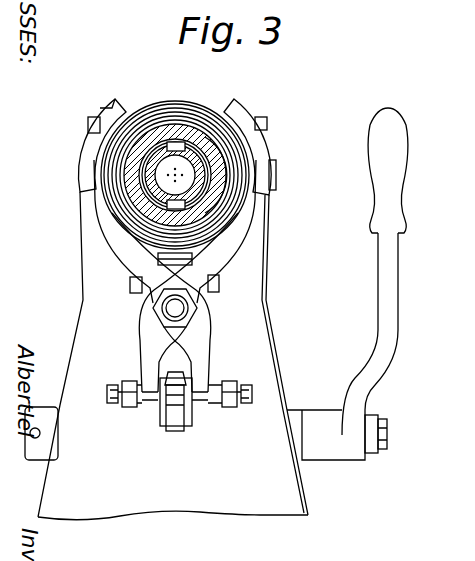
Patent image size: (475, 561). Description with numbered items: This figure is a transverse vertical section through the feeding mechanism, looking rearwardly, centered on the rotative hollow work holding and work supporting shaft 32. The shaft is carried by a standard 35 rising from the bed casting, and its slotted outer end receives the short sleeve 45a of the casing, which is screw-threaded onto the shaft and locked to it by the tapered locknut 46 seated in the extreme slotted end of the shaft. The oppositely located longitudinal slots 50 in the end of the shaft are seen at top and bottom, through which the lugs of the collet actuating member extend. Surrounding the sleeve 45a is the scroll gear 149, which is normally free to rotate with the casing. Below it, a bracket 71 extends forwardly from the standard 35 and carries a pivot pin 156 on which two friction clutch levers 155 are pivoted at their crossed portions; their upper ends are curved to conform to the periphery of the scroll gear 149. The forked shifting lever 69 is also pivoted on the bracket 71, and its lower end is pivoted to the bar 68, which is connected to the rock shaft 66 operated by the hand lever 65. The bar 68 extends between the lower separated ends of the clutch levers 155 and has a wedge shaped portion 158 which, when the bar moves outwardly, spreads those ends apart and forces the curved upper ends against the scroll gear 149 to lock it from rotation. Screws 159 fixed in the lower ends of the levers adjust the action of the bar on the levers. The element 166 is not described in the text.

The hollow work holding and work supporting shaft 32 is at (205, 152).
The standard 35 is at (252, 246).
The sleeve 45a is at (212, 199).
The locknut 46 is at (150, 183).
The longitudinal slots 50 is at (181, 142).
The hand lever 65 is at (383, 318).
The rock shaft 66 is at (387, 432).
The bar 68 is at (179, 431).
The forked shifting lever 69 is at (206, 322).
The bracket 71 is at (173, 261).
The scroll gear 149 is at (196, 150).
The clutch levers 155 is at (262, 148).
The pivot pin 156 is at (175, 309).
The wedge shaped portion 158 is at (181, 412).
The screws 159 is at (110, 403).
The left flange 166 is at (88, 150).